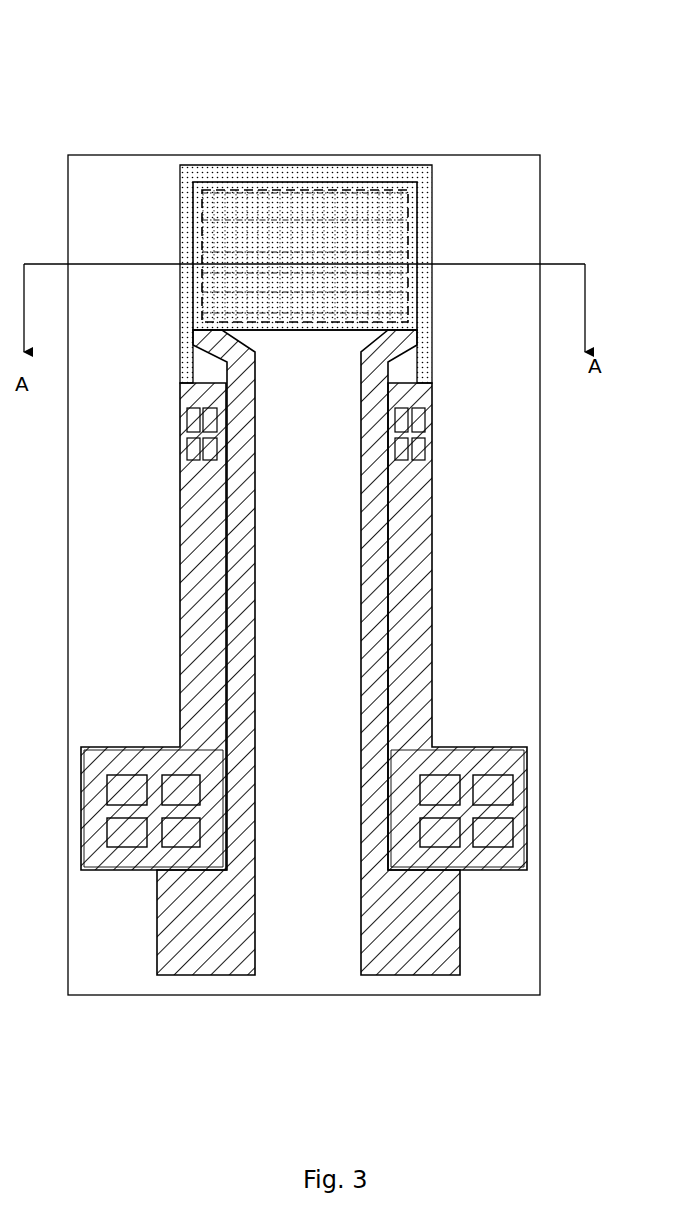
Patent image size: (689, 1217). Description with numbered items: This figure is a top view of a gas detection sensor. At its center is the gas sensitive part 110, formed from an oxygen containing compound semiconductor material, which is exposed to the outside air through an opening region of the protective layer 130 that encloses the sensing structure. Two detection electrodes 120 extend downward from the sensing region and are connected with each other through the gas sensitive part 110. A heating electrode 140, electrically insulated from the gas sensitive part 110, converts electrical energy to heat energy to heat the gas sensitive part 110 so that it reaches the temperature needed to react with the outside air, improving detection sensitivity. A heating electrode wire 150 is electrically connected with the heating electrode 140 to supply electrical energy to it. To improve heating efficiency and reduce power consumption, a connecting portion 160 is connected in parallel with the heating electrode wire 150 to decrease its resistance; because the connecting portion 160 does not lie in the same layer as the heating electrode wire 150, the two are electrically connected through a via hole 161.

The gas sensitive part 110 is at (270, 232).
The detection electrodes 120 is at (217, 933).
The protective layer 130 is at (505, 197).
The heating electrode 140 is at (342, 213).
The heating electrode wire 150 is at (185, 178).
The connecting portion 160 is at (433, 590).
The via hole 161 is at (515, 783).